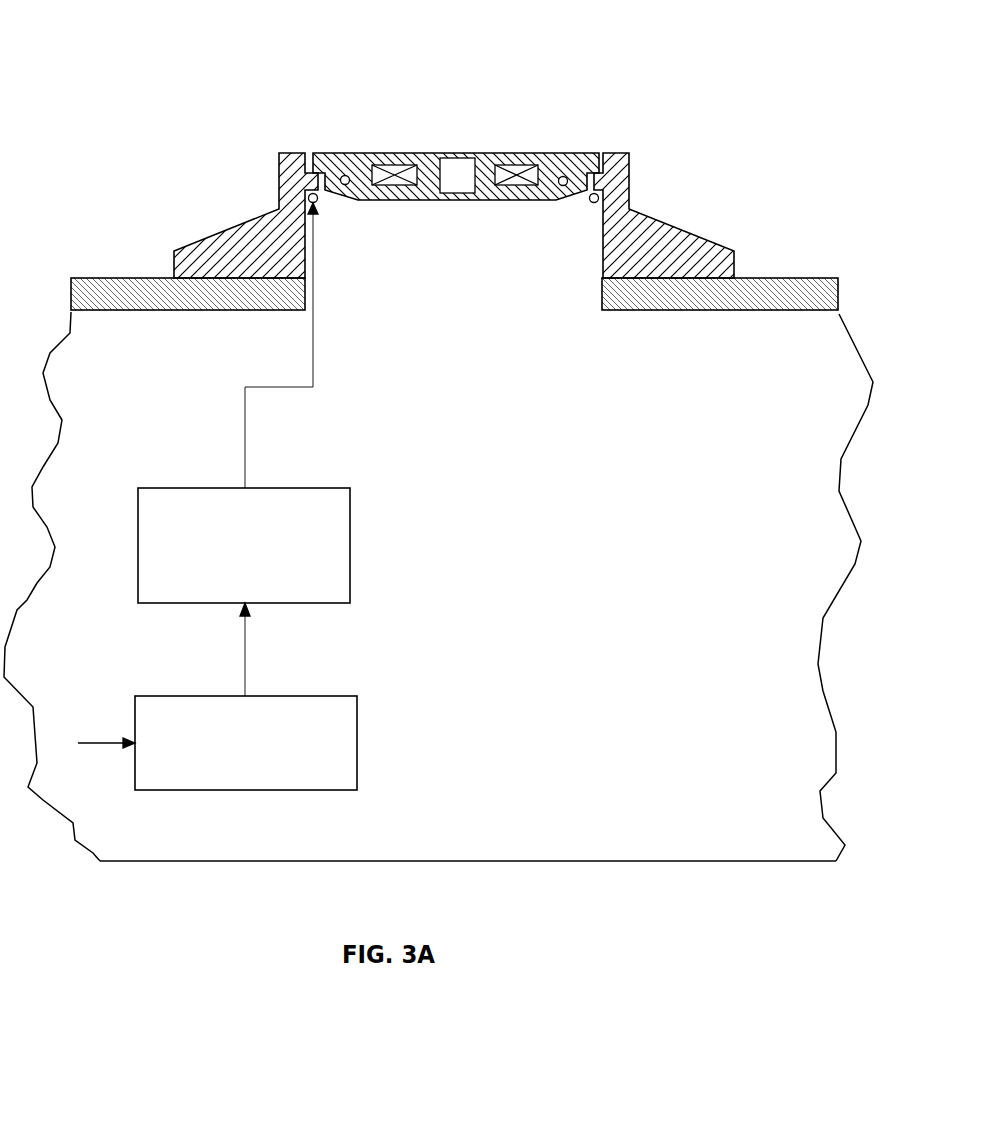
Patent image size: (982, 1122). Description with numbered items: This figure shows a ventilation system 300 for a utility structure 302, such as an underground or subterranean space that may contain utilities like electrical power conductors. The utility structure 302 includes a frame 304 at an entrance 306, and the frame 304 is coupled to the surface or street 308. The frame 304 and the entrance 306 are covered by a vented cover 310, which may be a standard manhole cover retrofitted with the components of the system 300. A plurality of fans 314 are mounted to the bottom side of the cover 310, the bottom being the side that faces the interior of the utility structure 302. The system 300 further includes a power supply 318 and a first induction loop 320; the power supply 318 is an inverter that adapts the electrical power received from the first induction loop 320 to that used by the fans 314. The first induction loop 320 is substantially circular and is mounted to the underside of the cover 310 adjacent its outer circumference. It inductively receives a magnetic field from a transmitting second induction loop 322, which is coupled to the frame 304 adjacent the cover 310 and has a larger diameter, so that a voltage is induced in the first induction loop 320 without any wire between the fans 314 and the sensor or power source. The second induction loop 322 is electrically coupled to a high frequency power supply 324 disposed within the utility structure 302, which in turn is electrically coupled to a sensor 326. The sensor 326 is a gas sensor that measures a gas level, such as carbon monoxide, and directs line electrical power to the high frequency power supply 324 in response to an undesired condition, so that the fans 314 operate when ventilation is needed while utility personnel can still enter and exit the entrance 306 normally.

The ventilation system 300 is at (581, 88).
The utility structure 302 is at (675, 523).
The frame 304 is at (707, 237).
The entrance 306 is at (531, 310).
The street 308 is at (123, 277).
The vented cover 310 is at (323, 152).
The fans 314 is at (398, 165).
The power supply 318 is at (454, 196).
The first induction loop 320 is at (346, 175).
The second induction loop 322 is at (320, 200).
The high frequency power supply 324 is at (352, 545).
The sensor 326 is at (357, 725).